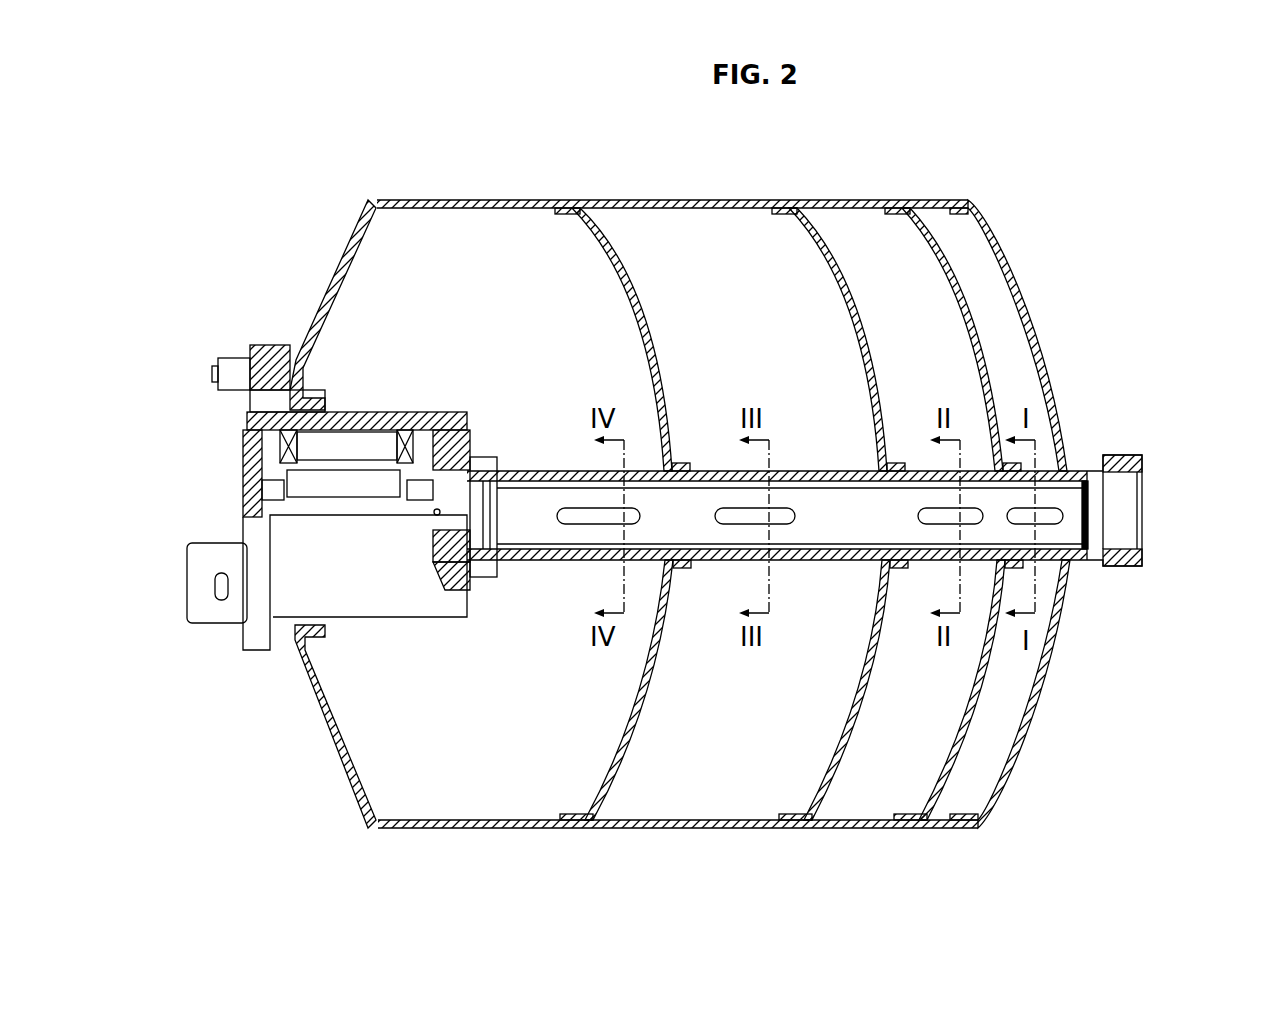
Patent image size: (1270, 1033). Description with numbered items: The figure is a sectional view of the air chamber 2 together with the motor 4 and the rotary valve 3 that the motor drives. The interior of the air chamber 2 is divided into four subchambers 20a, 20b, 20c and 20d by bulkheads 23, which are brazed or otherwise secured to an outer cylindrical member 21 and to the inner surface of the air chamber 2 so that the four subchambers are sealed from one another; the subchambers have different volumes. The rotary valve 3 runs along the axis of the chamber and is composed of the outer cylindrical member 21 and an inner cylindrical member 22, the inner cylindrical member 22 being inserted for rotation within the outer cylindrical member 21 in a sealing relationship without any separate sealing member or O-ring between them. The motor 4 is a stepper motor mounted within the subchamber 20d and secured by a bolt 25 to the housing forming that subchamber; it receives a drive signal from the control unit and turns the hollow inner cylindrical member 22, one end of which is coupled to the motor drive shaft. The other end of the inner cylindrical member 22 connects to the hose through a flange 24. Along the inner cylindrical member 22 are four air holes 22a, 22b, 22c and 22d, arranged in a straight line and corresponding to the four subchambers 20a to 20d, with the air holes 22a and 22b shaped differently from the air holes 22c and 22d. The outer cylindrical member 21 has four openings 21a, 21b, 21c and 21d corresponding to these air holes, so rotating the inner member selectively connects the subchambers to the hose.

The air chamber 2 is at (735, 200).
The rotary valve 3 is at (855, 520).
The motor 4 is at (243, 512).
The subchamber 20a is at (1000, 300).
The subchamber 20b is at (925, 275).
The subchamber 20c is at (660, 240).
The subchamber 20d is at (437, 240).
The outer cylindrical member 21 is at (830, 468).
The opening 21a is at (1045, 470).
The opening 21b is at (925, 468).
The opening 21c is at (735, 468).
The opening 21d is at (600, 468).
The inner cylindrical member 22 is at (850, 565).
The air hole 22a is at (1053, 520).
The air hole 22b is at (937, 520).
The air hole 22c is at (740, 520).
The air hole 22d is at (587, 520).
The bulkhead 23 is at (630, 745).
The flange 24 is at (1135, 456).
The bolt 25 is at (233, 356).